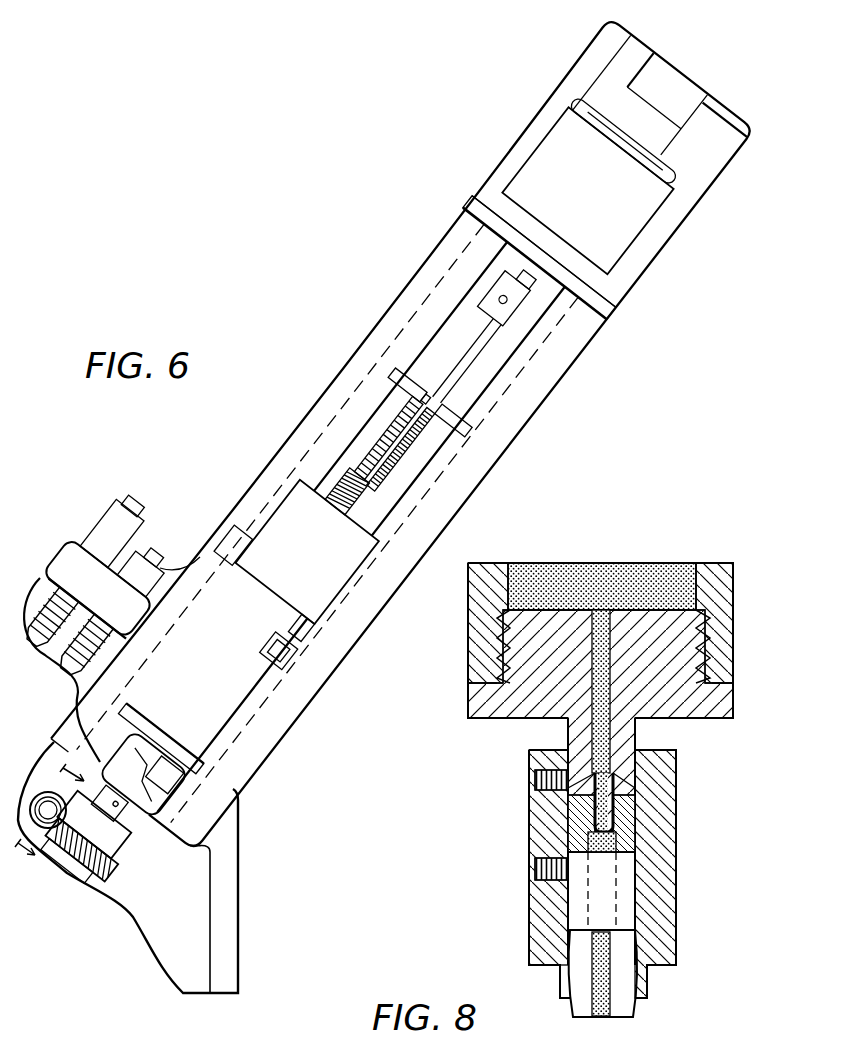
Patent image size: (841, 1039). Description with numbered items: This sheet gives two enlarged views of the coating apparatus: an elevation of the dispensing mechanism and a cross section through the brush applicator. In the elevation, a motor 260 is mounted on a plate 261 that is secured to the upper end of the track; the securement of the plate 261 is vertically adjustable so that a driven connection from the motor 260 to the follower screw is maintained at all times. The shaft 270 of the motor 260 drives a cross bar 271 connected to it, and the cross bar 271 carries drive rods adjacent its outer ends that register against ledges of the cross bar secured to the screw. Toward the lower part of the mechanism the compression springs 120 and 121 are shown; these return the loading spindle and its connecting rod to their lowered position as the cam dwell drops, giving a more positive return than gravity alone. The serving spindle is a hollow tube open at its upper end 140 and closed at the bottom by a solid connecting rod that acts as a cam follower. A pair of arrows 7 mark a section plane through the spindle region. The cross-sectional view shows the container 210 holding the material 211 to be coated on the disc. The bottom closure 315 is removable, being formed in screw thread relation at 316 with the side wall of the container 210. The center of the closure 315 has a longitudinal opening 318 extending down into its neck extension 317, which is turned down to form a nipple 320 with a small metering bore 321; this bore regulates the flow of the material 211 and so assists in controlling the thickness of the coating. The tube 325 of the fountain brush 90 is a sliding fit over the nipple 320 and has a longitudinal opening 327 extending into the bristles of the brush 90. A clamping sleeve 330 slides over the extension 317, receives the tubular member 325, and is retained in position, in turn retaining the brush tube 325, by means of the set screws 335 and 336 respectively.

In FIG. 6, the motor 260 is at (536, 186).
In FIG. 6, the plate 261 is at (604, 306).
In FIG. 6, the shaft 270 is at (534, 276).
In FIG. 6, the cross bar 271 is at (501, 324).
In FIG. 6, the compression spring 120 is at (43, 594).
In FIG. 6, the upper end 140 is at (137, 511).
In FIG. 6, the compression spring 121 is at (78, 672).
In FIG. 6, the section line 7- 7 is at (55, 820).
In FIG. 8, the container 210 is at (733, 600).
In FIG. 8, the material 211 is at (598, 580).
In FIG. 8, the bottom closure 315 is at (705, 712).
In FIG. 8, the screw thread relation 316 is at (700, 652).
In FIG. 8, the neck extension 317 is at (640, 738).
In FIG. 8, the longitudinal opening 318 is at (592, 728).
In FIG. 8, the nipple 320 is at (592, 821).
In FIG. 8, the metering bore 321 is at (572, 790).
In FIG. 8, the tube 325 is at (628, 812).
In FIG. 8, the longitudinal opening 327 is at (605, 892).
In FIG. 8, the clamping sleeve 330 is at (678, 771).
In FIG. 8, the set screw 335 is at (535, 782).
In FIG. 8, the set screw 336 is at (535, 872).
In FIG. 8, the fountain brush 90 is at (630, 1000).